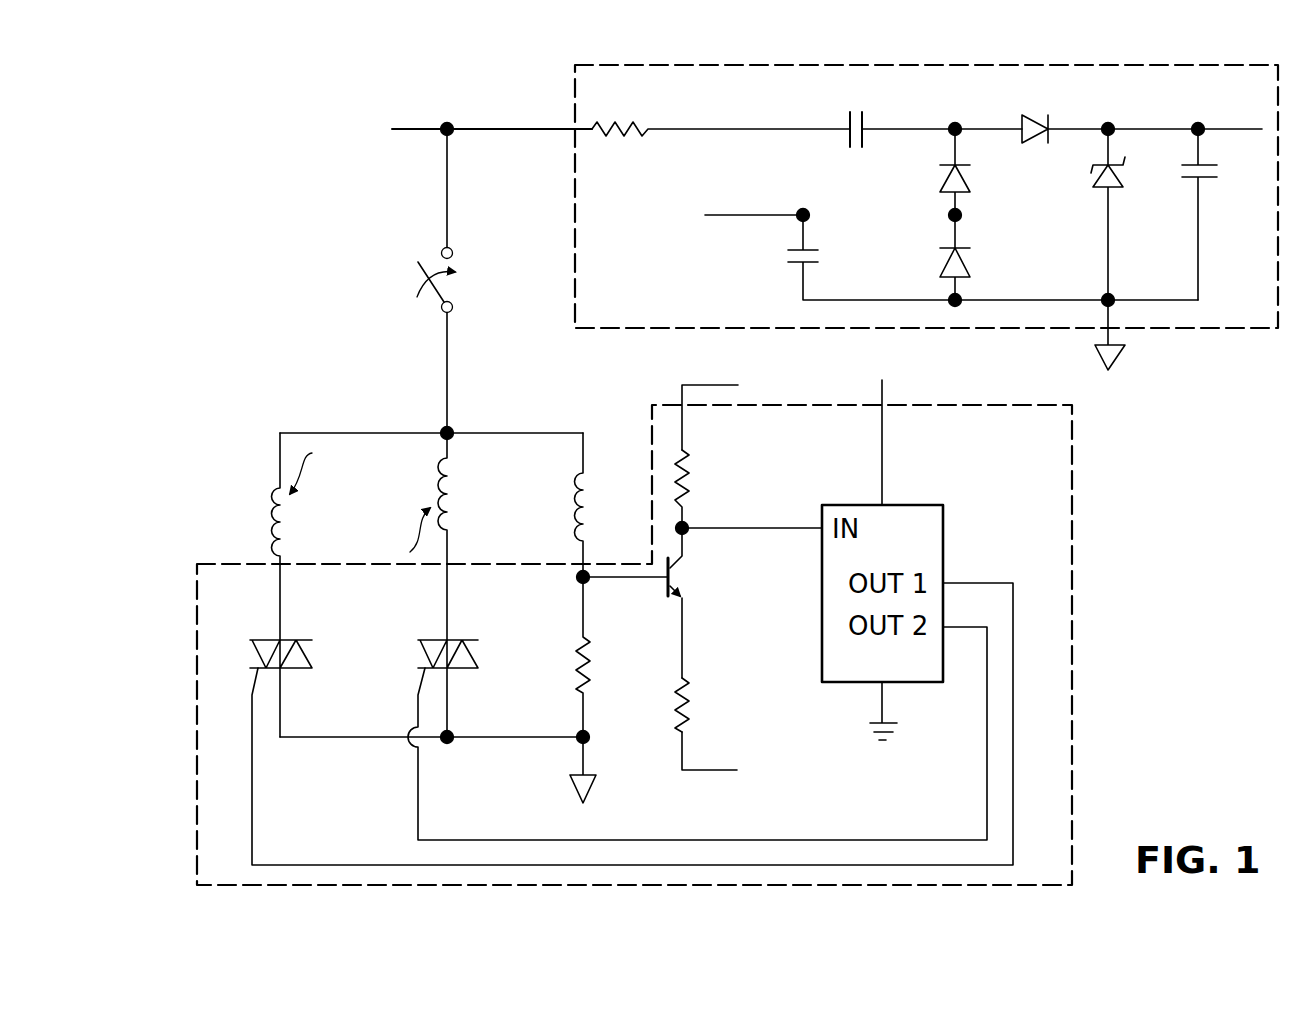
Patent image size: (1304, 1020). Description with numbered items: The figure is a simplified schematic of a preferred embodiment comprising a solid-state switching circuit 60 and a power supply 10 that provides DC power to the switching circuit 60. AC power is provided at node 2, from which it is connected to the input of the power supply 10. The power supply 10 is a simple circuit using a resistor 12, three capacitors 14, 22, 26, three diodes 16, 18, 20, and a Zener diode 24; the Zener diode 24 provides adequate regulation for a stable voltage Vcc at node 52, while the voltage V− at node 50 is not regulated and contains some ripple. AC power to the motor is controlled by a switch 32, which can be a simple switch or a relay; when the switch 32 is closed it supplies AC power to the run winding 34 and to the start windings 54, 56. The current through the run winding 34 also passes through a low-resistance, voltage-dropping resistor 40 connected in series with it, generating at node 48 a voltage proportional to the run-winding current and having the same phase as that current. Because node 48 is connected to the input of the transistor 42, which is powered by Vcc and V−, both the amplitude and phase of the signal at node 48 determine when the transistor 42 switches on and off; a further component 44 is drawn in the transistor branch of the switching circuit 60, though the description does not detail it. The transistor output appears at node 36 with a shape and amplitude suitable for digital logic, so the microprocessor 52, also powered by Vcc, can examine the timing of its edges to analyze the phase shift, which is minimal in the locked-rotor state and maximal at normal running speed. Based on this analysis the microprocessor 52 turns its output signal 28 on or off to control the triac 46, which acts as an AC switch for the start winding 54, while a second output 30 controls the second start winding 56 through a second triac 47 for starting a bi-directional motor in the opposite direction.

The node 2 is at (447, 122).
The power supply 10 is at (1200, 330).
The resistor 12 is at (618, 148).
The capacitor 14 is at (848, 112).
The diode 16 is at (1027, 143).
The diode 18 is at (962, 195).
The diode 20 is at (940, 265).
The capacitor 22 is at (790, 262).
The Zener diode 24 is at (1120, 185).
The capacitor 26 is at (1215, 178).
The output signal 28 is at (1000, 582).
The second output 30 is at (987, 773).
The switch 32 is at (415, 270).
The run winding 34 is at (583, 503).
The node 36 is at (753, 527).
The resistor 40 is at (590, 665).
The transistor 42 is at (688, 585).
The resistor 44 is at (693, 700).
The triac 46 is at (305, 670).
The second triac 47 is at (475, 670).
The node 48 is at (580, 580).
The node 50 is at (803, 210).
The node 52 is at (1198, 127).
The start winding 54 is at (278, 512).
The second start winding 56 is at (448, 498).
The solid-state switching circuit 60 is at (1072, 633).